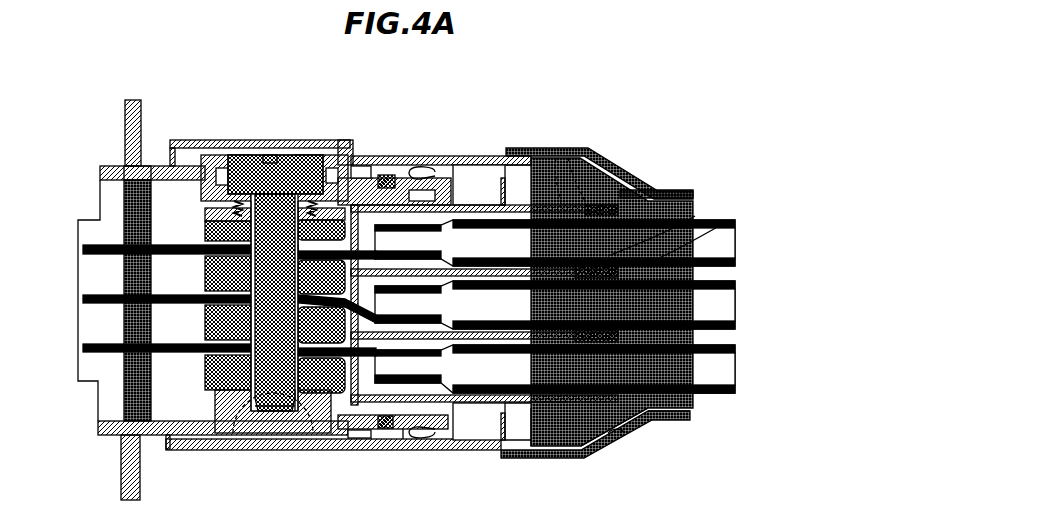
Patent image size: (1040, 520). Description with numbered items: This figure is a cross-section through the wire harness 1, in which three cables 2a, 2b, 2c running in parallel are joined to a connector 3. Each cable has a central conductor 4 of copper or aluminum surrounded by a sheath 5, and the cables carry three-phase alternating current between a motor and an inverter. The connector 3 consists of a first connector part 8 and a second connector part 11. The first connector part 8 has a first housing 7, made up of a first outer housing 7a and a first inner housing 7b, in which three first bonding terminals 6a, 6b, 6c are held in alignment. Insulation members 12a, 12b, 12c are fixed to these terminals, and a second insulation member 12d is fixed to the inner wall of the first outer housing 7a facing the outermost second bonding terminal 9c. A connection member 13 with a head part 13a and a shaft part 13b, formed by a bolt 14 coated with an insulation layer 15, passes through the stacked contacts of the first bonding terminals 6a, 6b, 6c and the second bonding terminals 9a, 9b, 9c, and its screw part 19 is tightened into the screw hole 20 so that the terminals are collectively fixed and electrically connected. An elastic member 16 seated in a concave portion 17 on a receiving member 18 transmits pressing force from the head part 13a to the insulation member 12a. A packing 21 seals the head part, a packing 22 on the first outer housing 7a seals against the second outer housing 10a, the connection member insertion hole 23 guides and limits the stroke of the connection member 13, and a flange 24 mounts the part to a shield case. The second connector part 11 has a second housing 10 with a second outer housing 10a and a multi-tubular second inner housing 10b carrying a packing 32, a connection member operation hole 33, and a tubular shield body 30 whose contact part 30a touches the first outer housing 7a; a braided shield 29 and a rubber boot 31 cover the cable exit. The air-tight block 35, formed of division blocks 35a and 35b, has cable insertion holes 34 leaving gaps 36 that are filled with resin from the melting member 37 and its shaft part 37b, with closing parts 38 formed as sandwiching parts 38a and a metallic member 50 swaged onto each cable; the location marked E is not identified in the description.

The wire harness 1 is at (650, 55).
The cable 2a is at (728, 231).
The cable 2b is at (728, 292).
The cable 2c is at (728, 361).
The connector 3 is at (163, 57).
The central conductor 4 is at (689, 386).
The sheath 5 is at (711, 386).
The first bonding terminal 6a is at (83, 240).
The first bonding terminal 6b is at (83, 289).
The first bonding terminal 6c is at (83, 338).
The first housing 7 is at (93, 158).
The first outer housing 7a is at (141, 158).
The first inner housing 7b is at (117, 399).
The first connector part 8 is at (122, 92).
The second bonding terminal 9a is at (392, 160).
The second bonding terminal 9b is at (343, 300).
The second bonding terminal 9c is at (402, 431).
The second housing 10 is at (348, 290).
The second outer housing 10a is at (453, 148).
The second inner housing 10b is at (388, 370).
The second connector part 11 is at (537, 134).
The insulation member 12a is at (203, 196).
The insulation member 12b is at (197, 262).
The insulation member 12c is at (197, 315).
The second insulation member 12d is at (197, 367).
The connection member 13 is at (275, 150).
The head part 13a is at (262, 148).
The shaft part 13b is at (207, 386).
The bolt 14 is at (322, 158).
The insulation layer 15 is at (228, 424).
The elastic member 16 is at (238, 148).
The concave portion 17 is at (92, 166).
The receiving member 18 is at (197, 210).
The screw part 19 is at (300, 390).
The screw hole 20 is at (252, 405).
The packing 21 is at (357, 157).
The packing 22 is at (385, 172).
The connection member insertion hole 23 is at (343, 140).
The flange 24 is at (112, 470).
The braided shield 29 is at (545, 396).
The tubular shield body 30 is at (502, 419).
The contact part 30a is at (427, 433).
The rubber boot 31 is at (615, 437).
The packing 32 is at (424, 160).
The connection member operation hole 33 is at (217, 145).
The cable insertion hole 34 is at (534, 415).
The air-tight block 35 is at (553, 197).
The first division air-tight block 35a is at (470, 418).
The second division air-tight block 35b is at (595, 193).
The gap 36 is at (607, 200).
The melting member 37 is at (628, 270).
The shaft part 37b is at (687, 208).
The closing part 38 is at (640, 427).
The sandwiching part 38a is at (592, 430).
The metallic member 50 is at (650, 413).
The electrode E is at (713, 217).